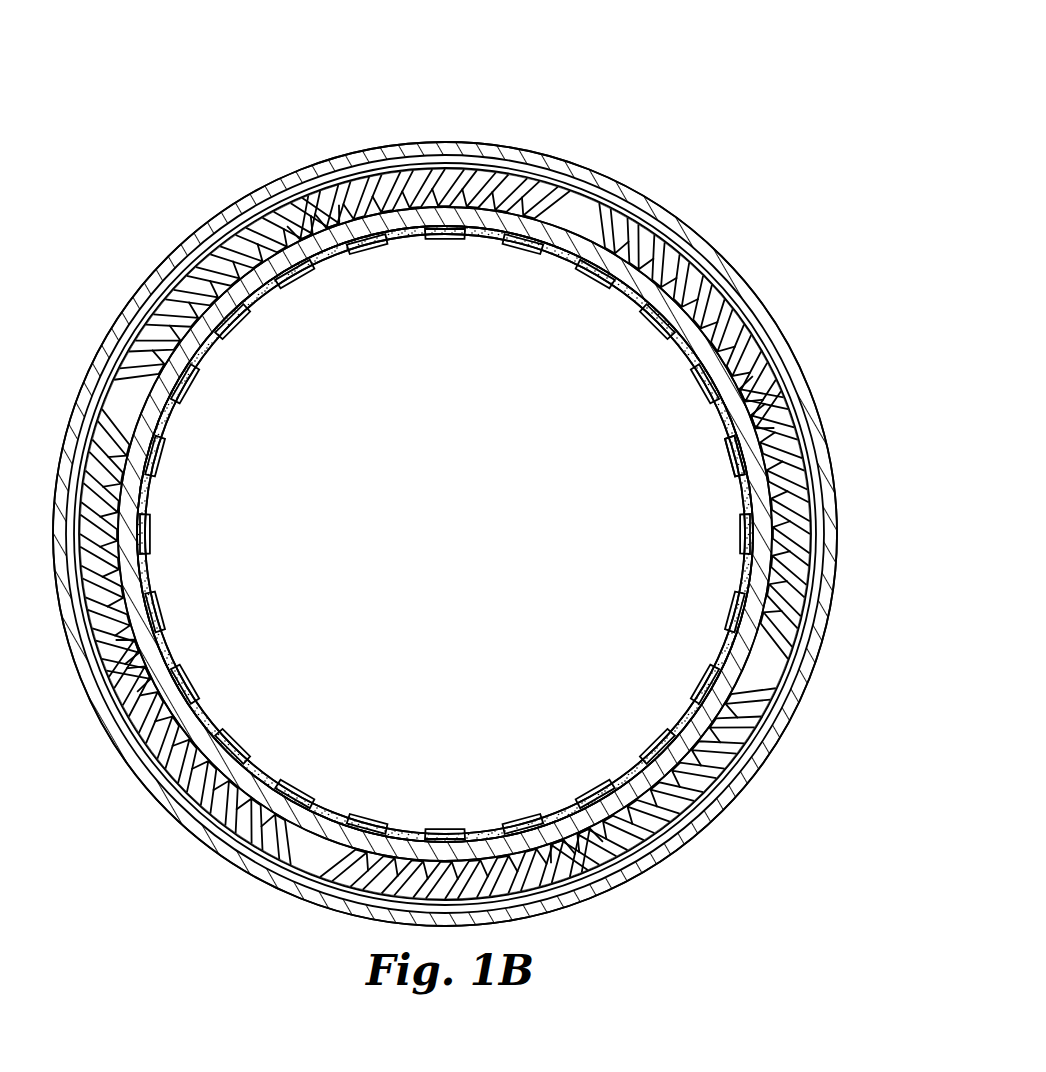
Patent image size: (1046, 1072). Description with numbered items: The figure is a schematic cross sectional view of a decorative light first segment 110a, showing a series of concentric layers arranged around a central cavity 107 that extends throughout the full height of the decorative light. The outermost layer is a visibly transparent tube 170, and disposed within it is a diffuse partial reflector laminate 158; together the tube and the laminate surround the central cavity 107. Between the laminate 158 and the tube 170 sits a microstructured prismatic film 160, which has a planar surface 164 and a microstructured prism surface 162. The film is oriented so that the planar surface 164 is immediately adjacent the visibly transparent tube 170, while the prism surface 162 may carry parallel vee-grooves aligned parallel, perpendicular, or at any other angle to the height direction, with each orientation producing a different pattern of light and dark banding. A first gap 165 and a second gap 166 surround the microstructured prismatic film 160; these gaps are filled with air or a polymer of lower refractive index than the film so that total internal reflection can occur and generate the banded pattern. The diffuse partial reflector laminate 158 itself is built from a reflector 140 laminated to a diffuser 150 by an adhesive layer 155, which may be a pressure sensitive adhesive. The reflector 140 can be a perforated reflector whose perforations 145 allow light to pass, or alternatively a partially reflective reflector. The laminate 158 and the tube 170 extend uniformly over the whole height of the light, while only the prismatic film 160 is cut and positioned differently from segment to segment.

The decorative light first segment 110a is at (700, 106).
The central cavity 107 is at (477, 486).
The reflector 140 is at (497, 244).
The perforations 145 is at (333, 266).
The diffuser 150 is at (626, 293).
The adhesive layer 155 is at (168, 426).
The diffuse partial reflector laminate 158 is at (212, 353).
The microstructured prismatic film 160 is at (650, 240).
The microstructured prism surface 162 is at (740, 459).
The planar surface 164 is at (762, 346).
The first gap 165 is at (707, 268).
The second gap 166 is at (690, 342).
The visibly transparent tube 170 is at (214, 224).